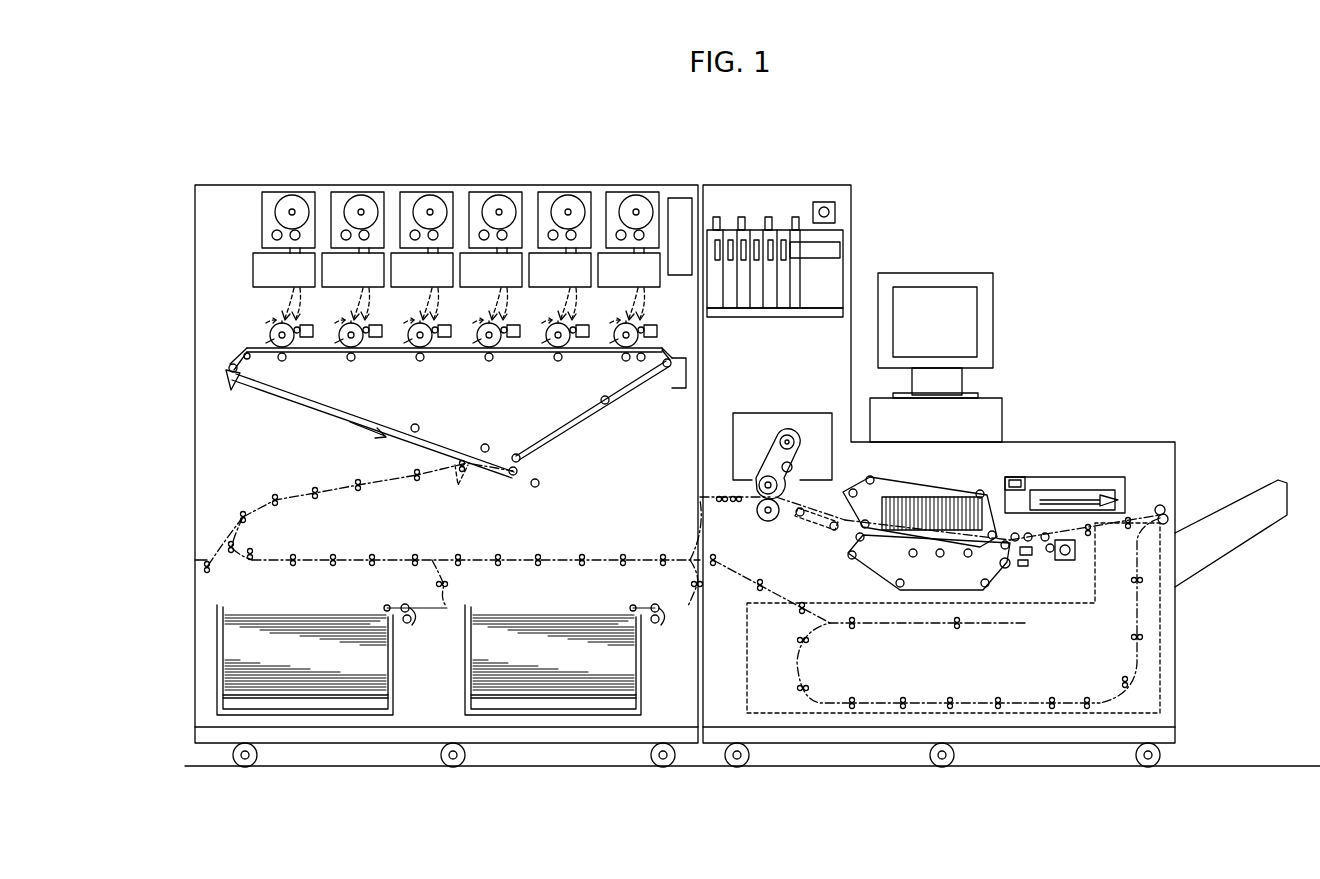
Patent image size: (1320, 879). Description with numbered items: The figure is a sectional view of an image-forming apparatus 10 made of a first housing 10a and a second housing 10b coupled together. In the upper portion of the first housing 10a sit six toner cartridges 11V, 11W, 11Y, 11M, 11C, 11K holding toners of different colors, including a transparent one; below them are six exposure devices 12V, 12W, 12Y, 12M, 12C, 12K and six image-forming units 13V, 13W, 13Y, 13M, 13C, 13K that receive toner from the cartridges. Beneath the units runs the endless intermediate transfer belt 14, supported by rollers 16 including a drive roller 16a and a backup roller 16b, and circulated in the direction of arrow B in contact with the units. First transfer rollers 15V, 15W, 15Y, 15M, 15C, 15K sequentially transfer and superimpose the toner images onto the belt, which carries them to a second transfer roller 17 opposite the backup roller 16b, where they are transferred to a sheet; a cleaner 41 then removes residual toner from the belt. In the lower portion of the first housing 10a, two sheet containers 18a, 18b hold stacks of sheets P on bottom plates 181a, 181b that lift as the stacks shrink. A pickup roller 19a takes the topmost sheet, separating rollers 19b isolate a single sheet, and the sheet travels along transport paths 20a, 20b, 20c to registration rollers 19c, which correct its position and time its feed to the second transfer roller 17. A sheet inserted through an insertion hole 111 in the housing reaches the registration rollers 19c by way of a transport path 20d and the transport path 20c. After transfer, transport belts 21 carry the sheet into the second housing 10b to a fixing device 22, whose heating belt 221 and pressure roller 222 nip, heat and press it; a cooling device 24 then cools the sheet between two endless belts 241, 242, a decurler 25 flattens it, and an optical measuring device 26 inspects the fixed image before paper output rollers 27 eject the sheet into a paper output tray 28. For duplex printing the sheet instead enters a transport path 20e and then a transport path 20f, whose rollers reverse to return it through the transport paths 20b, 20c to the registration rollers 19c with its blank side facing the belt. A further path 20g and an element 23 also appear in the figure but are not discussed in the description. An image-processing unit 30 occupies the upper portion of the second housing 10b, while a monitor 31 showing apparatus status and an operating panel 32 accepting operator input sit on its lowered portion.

The image-forming apparatus 10 is at (1015, 190).
The first housing 10a is at (228, 185).
The second housing 10b is at (848, 185).
The toner cartridge (black) 11K is at (283, 180).
The toner cartridge (cyan) 11C is at (352, 180).
The toner cartridge (magenta) 11M is at (421, 180).
The toner cartridge (yellow) 11Y is at (490, 180).
The toner cartridge (second special color) 11W is at (559, 180).
The toner cartridge (first special color) 11V is at (628, 180).
The exposure device (black) 12K is at (262, 290).
The exposure device (cyan) 12C is at (340, 290).
The exposure device (magenta) 12M is at (410, 290).
The exposure device (yellow) 12Y is at (479, 290).
The exposure device (second special color) 12W is at (548, 290).
The exposure device (first special color) 12V is at (616, 290).
The image-forming unit (black) 13K is at (284, 270).
The image-forming unit (cyan) 13C is at (353, 270).
The image-forming unit (magenta) 13M is at (422, 270).
The image-forming unit (yellow) 13Y is at (491, 270).
The image-forming unit (second special color) 13W is at (560, 270).
The image-forming unit (first special color) 13V is at (629, 270).
The intermediate transfer belt 14 is at (295, 395).
The first transfer roller (black) 15K is at (286, 361).
The first transfer roller (cyan) 15C is at (354, 361).
The first transfer roller (magenta) 15M is at (418, 361).
The first transfer roller (yellow) 15Y is at (486, 361).
The first transfer roller (second special color) 15W is at (555, 361).
The first transfer roller (first special color) 15V is at (624, 361).
The rollers 16 is at (602, 403).
The drive roller 16a is at (672, 362).
The backup roller 16b is at (517, 453).
The second transfer roller 17 is at (511, 476).
The sheet container 18a is at (339, 644).
The sheet container 18b is at (546, 613).
The bottom plate 181a is at (380, 697).
The bottom plate 181b is at (620, 697).
The pickup roller 19a is at (387, 605).
The separating rollers 19b is at (416, 620).
The registration rollers 19c is at (459, 480).
The transport path 20a is at (452, 585).
The transport path 20b is at (392, 556).
The transport path 20c is at (326, 486).
The transport path 20d is at (215, 556).
The transport path 20e is at (1140, 665).
The transport path 20f is at (895, 626).
The conveyance path 20g is at (755, 568).
The transport belts 21 is at (726, 494).
The fixing device 22 is at (772, 463).
The heating belt 221 is at (775, 432).
The pressure roller 222 is at (756, 516).
The cooling roller 23 is at (822, 510).
The cooling device 24 is at (928, 470).
The endless belt 241 is at (1015, 490).
The endless belt 242 is at (1010, 570).
The decurler 25 is at (1040, 558).
The optical measuring device 26 is at (1066, 481).
The paper output rollers 27 is at (1168, 518).
The paper output tray 28 is at (1233, 535).
The image-processing unit 30 is at (848, 245).
The monitor 31 is at (965, 298).
The operating panel 32 is at (975, 392).
The cleaner 41 is at (690, 372).
The insertion hole 111 is at (200, 566).
The arrow B is at (377, 439).
The sheets P is at (314, 613).